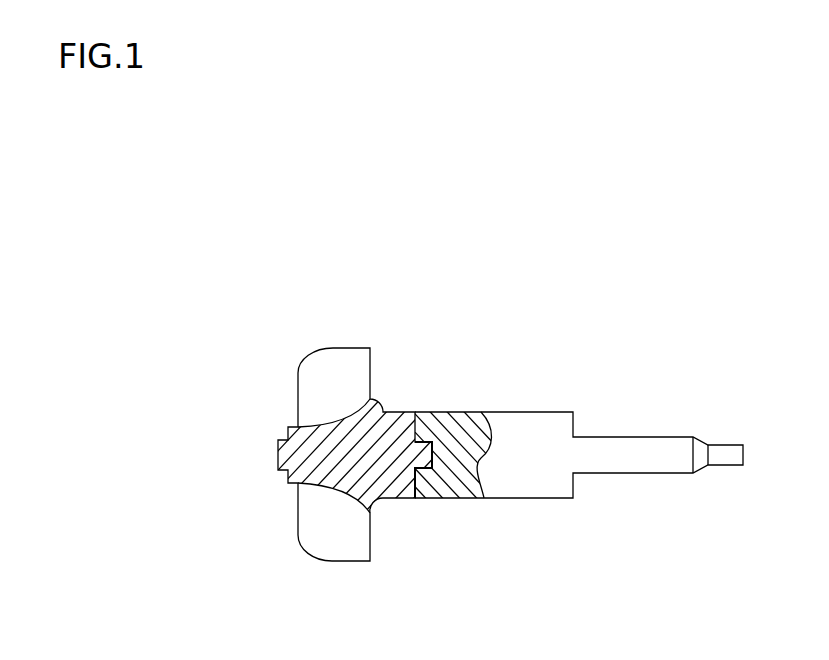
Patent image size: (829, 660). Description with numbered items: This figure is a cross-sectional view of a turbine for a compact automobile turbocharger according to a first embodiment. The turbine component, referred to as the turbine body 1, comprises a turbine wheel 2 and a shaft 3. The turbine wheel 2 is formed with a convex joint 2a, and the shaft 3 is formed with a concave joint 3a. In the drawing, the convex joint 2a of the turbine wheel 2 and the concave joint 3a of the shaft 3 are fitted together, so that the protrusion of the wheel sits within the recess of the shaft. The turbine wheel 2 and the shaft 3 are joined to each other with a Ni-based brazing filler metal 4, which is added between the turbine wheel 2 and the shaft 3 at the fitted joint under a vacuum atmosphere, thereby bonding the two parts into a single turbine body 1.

The turbine body 1 is at (427, 301).
The turbine wheel 2 is at (290, 474).
The convex joint 2a is at (421, 446).
The shaft 3 is at (558, 488).
The concave joint 3a is at (428, 485).
The Ni-based brazing filler metal 4 is at (418, 478).